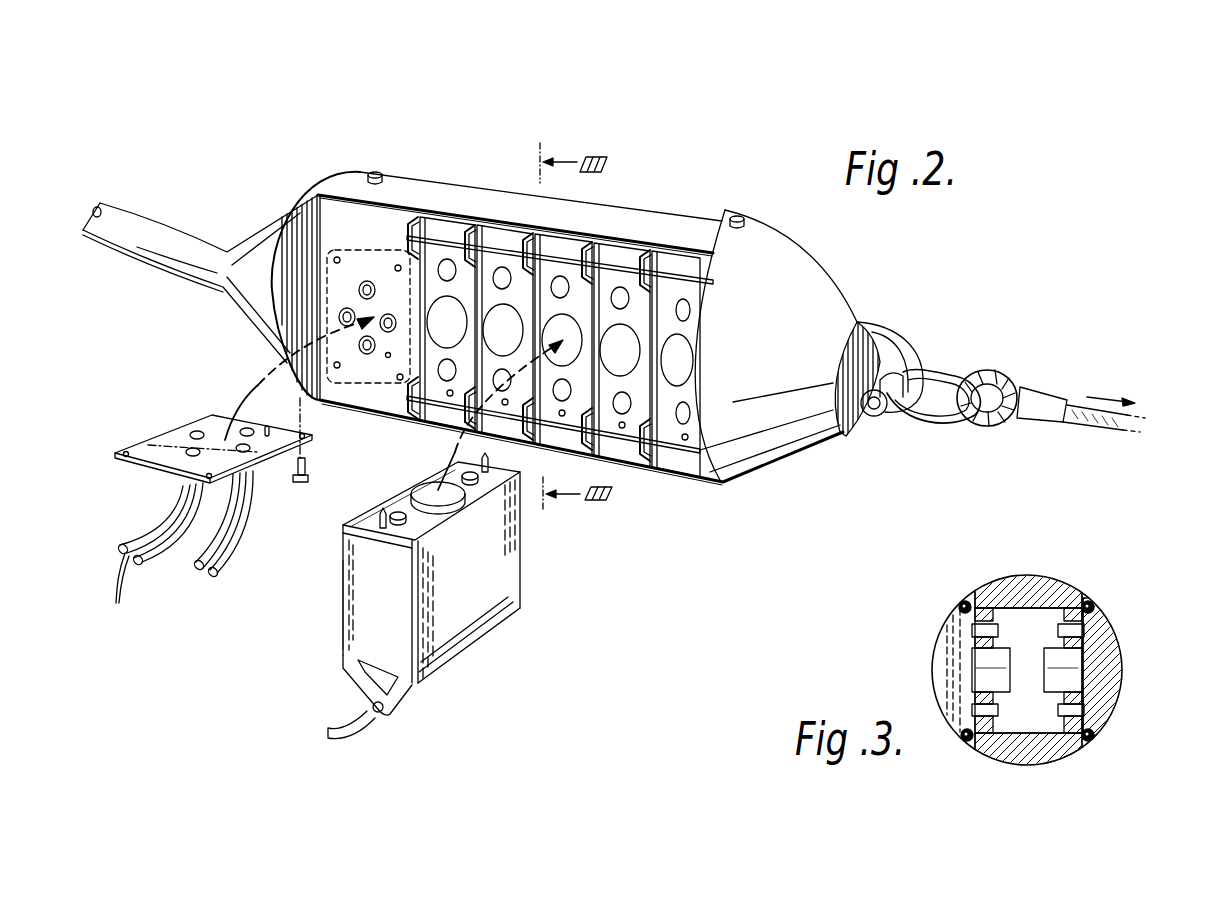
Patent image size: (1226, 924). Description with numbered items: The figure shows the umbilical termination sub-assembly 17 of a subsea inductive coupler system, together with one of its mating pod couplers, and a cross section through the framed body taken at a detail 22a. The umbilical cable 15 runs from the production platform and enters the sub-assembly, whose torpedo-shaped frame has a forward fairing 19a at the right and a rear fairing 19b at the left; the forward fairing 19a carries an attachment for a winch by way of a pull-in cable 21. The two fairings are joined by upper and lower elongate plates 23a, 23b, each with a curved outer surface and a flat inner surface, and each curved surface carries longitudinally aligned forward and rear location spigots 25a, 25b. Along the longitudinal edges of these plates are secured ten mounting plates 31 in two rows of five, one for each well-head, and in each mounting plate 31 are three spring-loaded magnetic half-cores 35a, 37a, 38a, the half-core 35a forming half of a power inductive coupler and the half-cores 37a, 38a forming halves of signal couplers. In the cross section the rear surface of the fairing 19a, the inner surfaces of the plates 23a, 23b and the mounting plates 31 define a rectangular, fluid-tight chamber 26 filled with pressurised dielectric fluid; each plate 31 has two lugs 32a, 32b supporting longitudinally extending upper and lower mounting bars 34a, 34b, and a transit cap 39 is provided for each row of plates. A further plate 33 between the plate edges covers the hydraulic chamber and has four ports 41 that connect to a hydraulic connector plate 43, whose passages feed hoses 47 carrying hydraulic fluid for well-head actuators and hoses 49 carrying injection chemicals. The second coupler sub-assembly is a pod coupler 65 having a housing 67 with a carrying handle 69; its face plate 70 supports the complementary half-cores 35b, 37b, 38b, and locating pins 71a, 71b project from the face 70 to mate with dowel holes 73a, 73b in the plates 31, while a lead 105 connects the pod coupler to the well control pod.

In FIG. 2, the umbilical cable 15 is at (142, 218).
In FIG. 2, the umbilical termination sub-assembly 17 is at (811, 470).
In FIG. 2, the forward fairing 19a is at (856, 310).
In FIG. 2, the rear fairing 19b is at (276, 215).
In FIG. 2, the pull-in cable 21 is at (1098, 424).
In FIG. 3, the section detail 22a is at (1060, 672).
In FIG. 2, the upper elongate plate 23a is at (712, 230).
In FIG. 3, the upper elongate plate 23a is at (1068, 586).
In FIG. 2, the lower elongate plate 23b is at (708, 472).
In FIG. 3, the lower elongate plate 23b is at (1020, 754).
In FIG. 2, the forward location spigot 25a is at (748, 211).
In FIG. 2, the rear location spigot 25b is at (386, 172).
In FIG. 3, the chamber 26 is at (1013, 716).
In FIG. 2, the mounting plate 31 is at (712, 268).
In FIG. 2, the upper lug 32a is at (422, 232).
In FIG. 3, the upper lug 32a is at (1056, 611).
In FIG. 2, the lower lug 32b is at (590, 455).
In FIG. 3, the lower lug 32b is at (1106, 734).
In FIG. 2, the further plate 33 is at (383, 227).
In FIG. 2, the upper mounting bar 34a is at (536, 258).
In FIG. 3, the upper mounting bar 34a is at (1095, 606).
In FIG. 2, the lower mounting bar 34b is at (650, 466).
In FIG. 3, the lower mounting bar 34b is at (1087, 742).
In FIG. 2, the magnetic half-core 35a is at (445, 382).
In FIG. 3, the magnetic half-core 35a is at (1073, 675).
In FIG. 2, the magnetic half-core 35b is at (447, 500).
In FIG. 2, the magnetic half-core 37a is at (495, 390).
In FIG. 3, the magnetic half-core 37a is at (1082, 715).
In FIG. 2, the magnetic half-core 37b is at (478, 482).
In FIG. 2, the magnetic half-core 38a is at (626, 288).
In FIG. 3, the magnetic half-core 38a is at (1083, 641).
In FIG. 2, the magnetic half-core 38b is at (397, 522).
In FIG. 3, the transit cap 39 is at (1112, 637).
In FIG. 2, the port 41 is at (363, 282).
In FIG. 2, the hydraulic connector plate 43 is at (214, 417).
In FIG. 2, the hydraulic hose 47 is at (233, 557).
In FIG. 2, the hydraulic hose 49 is at (124, 589).
In FIG. 2, the pod coupler 65 is at (452, 684).
In FIG. 2, the housing 67 is at (344, 662).
In FIG. 2, the carrying handle 69 is at (393, 712).
In FIG. 2, the face plate 70 is at (408, 532).
In FIG. 2, the locating pin 71a is at (489, 466).
In FIG. 2, the locating pin 71b is at (380, 524).
In FIG. 2, the dowel hole 73a is at (692, 428).
In FIG. 2, the dowel hole 73b is at (702, 303).
In FIG. 2, the lead 105 is at (326, 732).